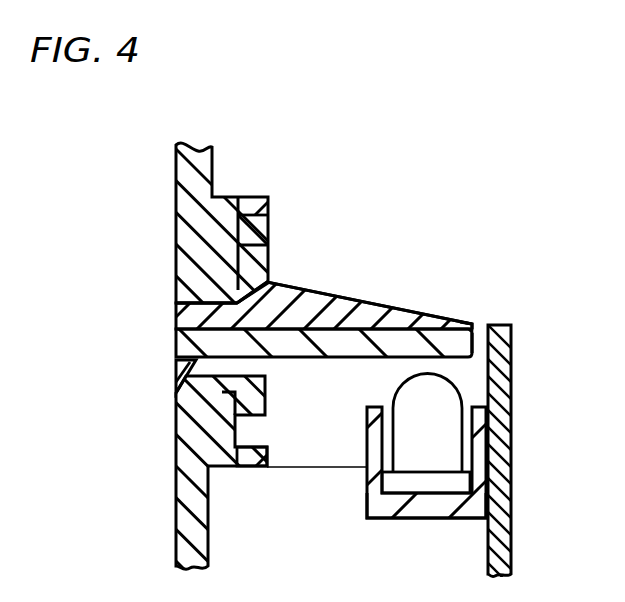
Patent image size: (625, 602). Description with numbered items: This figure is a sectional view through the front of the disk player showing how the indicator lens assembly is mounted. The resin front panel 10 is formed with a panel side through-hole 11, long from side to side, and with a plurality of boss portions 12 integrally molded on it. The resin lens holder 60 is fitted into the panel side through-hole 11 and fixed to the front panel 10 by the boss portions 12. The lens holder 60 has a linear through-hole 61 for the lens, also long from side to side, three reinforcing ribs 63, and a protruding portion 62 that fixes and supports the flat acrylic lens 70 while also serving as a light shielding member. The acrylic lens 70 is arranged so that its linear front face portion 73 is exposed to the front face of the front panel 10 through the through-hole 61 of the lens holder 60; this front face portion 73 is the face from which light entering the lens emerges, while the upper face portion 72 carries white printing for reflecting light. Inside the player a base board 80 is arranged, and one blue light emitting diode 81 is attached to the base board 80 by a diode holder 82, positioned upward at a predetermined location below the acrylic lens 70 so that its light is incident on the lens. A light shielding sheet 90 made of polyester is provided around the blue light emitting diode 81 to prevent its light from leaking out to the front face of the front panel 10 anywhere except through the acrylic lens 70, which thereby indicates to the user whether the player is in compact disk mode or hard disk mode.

The front panel 10 is at (177, 165).
The panel side through-hole 11 is at (176, 300).
The boss portions 12 is at (271, 214).
The lens holder 60 is at (175, 320).
The through-hole for the lens 61 is at (176, 360).
The protruding portion 62 is at (474, 323).
The reinforcing ribs 63 is at (348, 295).
The acrylic lens 70 is at (312, 365).
The upper face portion 72 is at (474, 346).
The front face portion 73 is at (175, 345).
The base board 80 is at (512, 367).
The blue light emitting diode 81 is at (398, 388).
The diode holder 82 is at (427, 519).
The light shielding sheet 90 is at (246, 468).